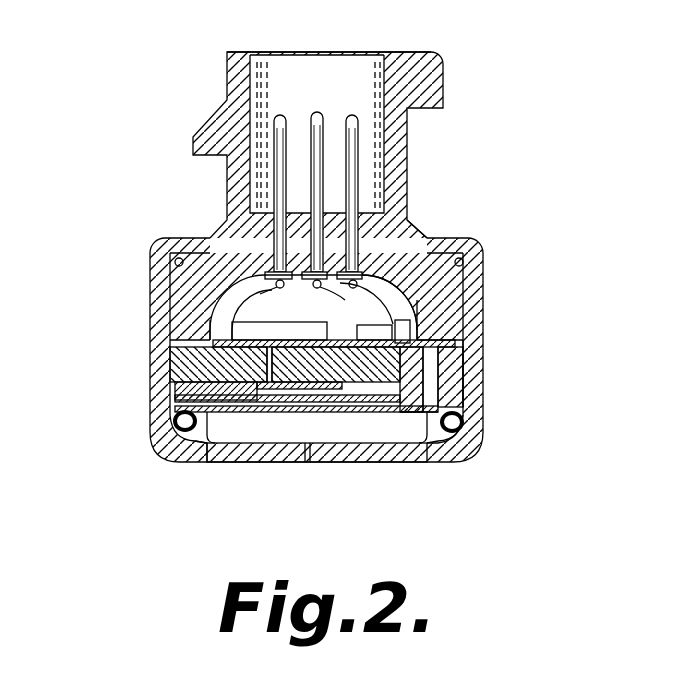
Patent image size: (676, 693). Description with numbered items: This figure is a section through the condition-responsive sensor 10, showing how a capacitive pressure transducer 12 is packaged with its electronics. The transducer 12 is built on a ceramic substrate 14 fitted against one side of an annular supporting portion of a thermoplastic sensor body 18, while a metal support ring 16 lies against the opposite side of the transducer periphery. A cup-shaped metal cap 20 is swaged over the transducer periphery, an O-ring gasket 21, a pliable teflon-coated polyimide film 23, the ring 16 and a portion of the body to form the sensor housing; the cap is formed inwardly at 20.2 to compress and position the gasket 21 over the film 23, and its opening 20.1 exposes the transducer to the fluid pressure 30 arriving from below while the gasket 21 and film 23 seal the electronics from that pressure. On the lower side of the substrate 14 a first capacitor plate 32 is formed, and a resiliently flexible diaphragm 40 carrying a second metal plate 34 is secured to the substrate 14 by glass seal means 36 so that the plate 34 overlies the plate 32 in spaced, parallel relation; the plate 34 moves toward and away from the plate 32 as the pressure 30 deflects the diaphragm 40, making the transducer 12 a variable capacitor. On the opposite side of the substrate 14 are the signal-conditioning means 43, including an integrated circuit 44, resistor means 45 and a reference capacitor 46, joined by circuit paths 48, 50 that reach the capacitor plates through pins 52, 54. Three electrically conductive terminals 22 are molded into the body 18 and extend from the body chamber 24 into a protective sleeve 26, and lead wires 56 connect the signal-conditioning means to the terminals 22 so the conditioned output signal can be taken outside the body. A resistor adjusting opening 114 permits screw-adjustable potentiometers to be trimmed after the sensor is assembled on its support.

The condition-responsive sensor 10 is at (478, 129).
The capacitive pressure transducer 12 is at (160, 360).
The ceramic substrate 14 is at (177, 352).
The metal support ring 16 is at (483, 408).
The sensor body 18 is at (405, 168).
The cup-shaped metal cap 20 is at (465, 395).
The cap opening 20.1 is at (323, 449).
The inwardly formed cap portion 20.2 is at (443, 455).
The O-ring gasket 21 is at (183, 432).
The electrically conductive terminals 22 is at (352, 116).
The pliable teflon-coated polyimide film 23 is at (403, 415).
The body chamber 24 is at (253, 282).
The protective sleeve 26 is at (260, 37).
The fluid pressure 30 is at (314, 545).
The first capacitor plate 32 is at (283, 441).
The second capacitor plate 34 is at (242, 412).
The glass seal means 36 is at (190, 403).
The resiliently flexible diaphragm 40 is at (203, 443).
The signal-conditioning means 43 is at (415, 302).
The integrated circuit 44 is at (228, 332).
The resistor means 45 is at (402, 330).
The reference capacitor 46 is at (422, 318).
The circuit path 48 is at (240, 327).
The circuit path 50 is at (455, 345).
The pin 52 is at (270, 343).
The pin 54 is at (430, 360).
The bond wires 56 is at (322, 289).
The resistor adjusting opening 114 is at (417, 237).